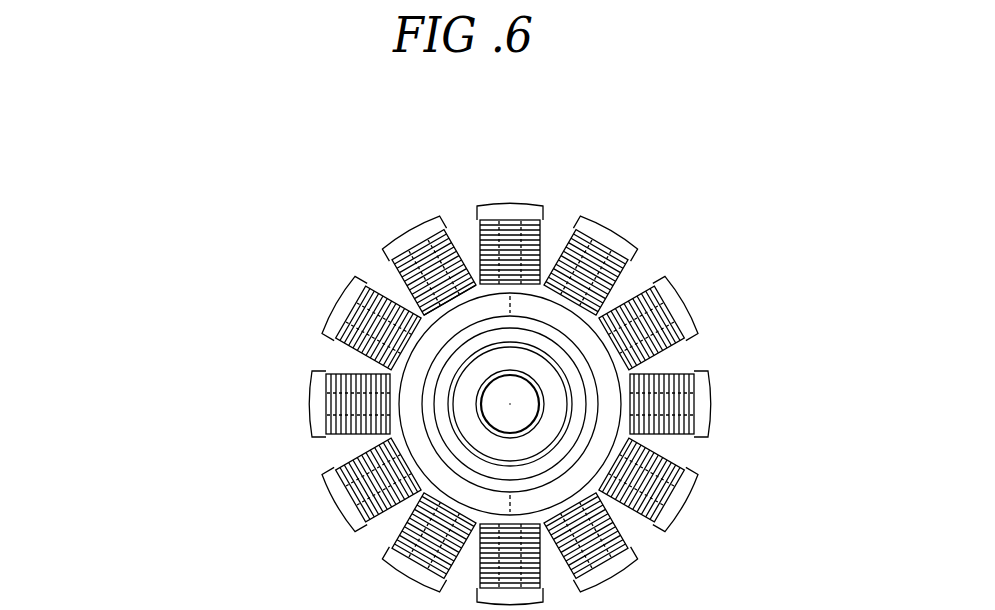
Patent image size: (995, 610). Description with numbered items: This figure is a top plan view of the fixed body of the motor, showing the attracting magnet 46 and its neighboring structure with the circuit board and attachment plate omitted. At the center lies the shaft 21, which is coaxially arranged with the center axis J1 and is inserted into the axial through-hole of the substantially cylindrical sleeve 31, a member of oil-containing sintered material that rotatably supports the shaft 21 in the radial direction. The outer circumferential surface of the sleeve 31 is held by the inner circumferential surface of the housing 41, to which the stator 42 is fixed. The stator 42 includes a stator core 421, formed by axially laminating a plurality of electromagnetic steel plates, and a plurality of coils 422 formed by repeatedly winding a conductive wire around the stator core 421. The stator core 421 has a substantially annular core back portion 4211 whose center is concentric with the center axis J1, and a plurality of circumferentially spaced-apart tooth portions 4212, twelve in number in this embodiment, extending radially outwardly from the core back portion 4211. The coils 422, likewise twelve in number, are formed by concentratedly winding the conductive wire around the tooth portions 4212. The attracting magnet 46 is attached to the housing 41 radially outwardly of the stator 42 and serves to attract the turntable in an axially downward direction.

The stator 42 is at (346, 223).
The stator core 421 is at (271, 285).
The core back portion 4211 is at (430, 322).
The tooth portions 4212 is at (340, 300).
The coils 422 is at (458, 249).
The housing 41 is at (537, 340).
The sleeve 31 is at (542, 372).
The shaft 21 is at (520, 397).
The attracting magnet 46 is at (418, 430).
The center axis J1 is at (512, 405).